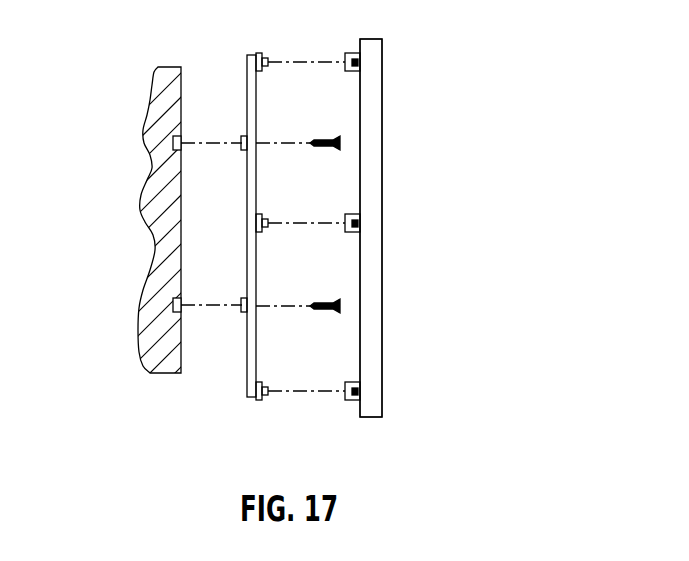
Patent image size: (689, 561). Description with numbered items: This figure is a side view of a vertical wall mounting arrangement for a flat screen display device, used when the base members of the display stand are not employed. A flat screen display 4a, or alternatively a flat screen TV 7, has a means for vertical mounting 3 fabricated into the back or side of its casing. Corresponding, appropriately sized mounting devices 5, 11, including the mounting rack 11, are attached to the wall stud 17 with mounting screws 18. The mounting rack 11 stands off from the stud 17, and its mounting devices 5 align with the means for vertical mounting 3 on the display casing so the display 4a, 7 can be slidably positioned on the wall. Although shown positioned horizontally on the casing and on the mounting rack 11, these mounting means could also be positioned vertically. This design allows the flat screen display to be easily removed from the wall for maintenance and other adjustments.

The wall stud 17 is at (173, 146).
The mounting rack 11 is at (244, 70).
The mounting device 5 is at (266, 401).
The means for vertical mounting 3 is at (353, 403).
The flat screen TV 7 is at (384, 129).
The flat screen display 4a is at (371, 228).
The mounting screw 18 is at (326, 136).